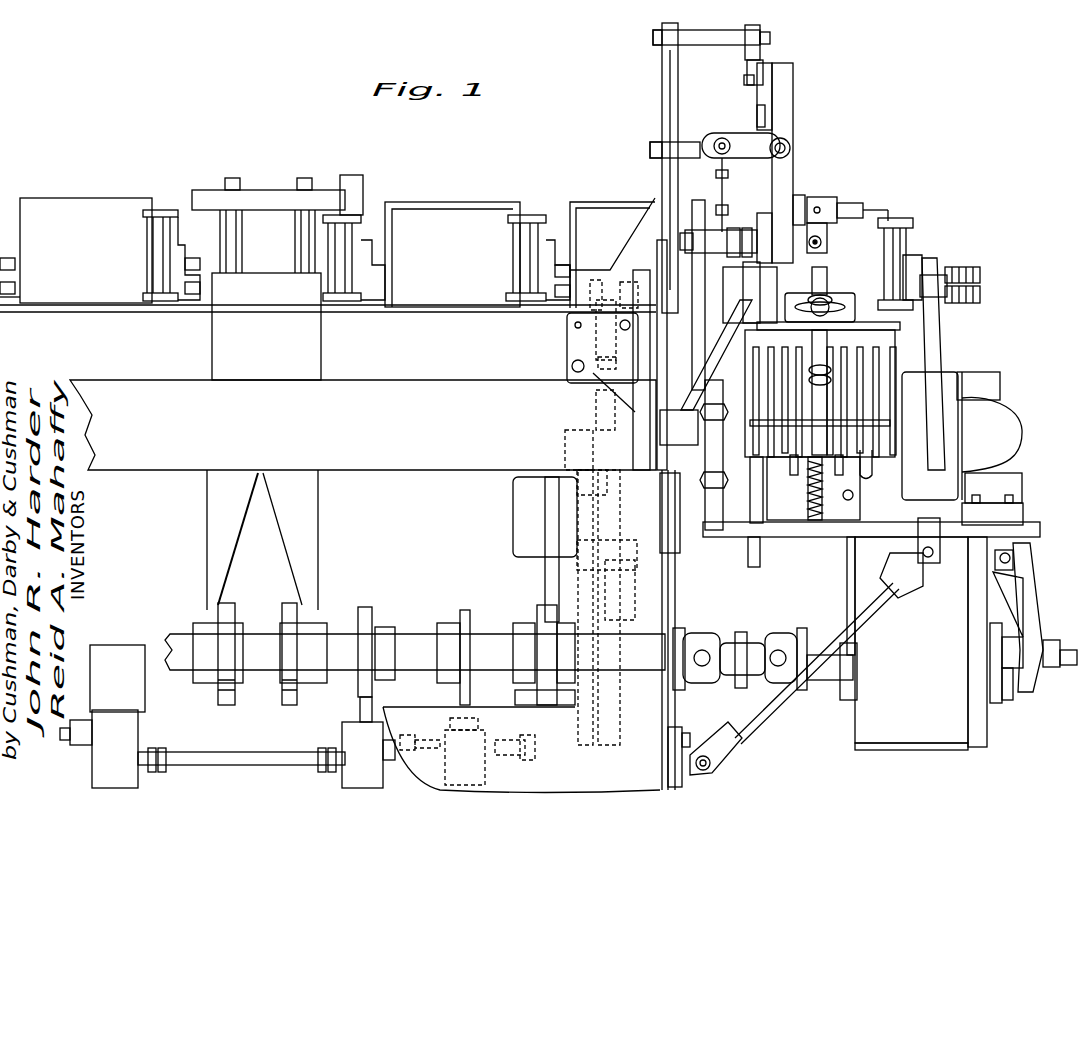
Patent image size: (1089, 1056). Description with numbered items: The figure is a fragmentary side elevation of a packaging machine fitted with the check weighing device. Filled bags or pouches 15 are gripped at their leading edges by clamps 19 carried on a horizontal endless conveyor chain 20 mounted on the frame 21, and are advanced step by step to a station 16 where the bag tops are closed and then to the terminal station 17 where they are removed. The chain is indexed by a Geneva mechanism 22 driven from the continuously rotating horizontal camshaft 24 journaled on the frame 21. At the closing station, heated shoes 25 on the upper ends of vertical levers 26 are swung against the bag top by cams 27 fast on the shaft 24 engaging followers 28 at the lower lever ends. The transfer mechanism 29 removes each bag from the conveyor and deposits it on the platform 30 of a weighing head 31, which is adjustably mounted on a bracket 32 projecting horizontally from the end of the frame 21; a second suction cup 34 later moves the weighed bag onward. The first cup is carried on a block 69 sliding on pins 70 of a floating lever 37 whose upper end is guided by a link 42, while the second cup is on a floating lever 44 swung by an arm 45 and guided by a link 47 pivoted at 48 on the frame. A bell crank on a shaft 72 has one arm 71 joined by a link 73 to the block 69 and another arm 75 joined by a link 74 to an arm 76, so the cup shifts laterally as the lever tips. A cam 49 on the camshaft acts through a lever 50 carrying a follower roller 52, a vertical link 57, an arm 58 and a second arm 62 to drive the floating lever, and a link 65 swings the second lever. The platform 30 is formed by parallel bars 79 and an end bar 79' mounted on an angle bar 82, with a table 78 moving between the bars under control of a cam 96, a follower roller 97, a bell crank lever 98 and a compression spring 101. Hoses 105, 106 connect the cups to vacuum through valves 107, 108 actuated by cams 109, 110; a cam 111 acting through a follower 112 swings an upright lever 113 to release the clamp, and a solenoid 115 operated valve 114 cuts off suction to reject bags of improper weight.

The bags or pouches 15 is at (114, 200).
The station 16 is at (275, 146).
The terminal station 17 is at (850, 147).
The clamps 19 is at (160, 213).
The conveyor chain 20 is at (980, 272).
The frame 21 is at (443, 376).
The Geneva mechanism 22 is at (940, 752).
The horizontal shaft 24 is at (178, 638).
The heated shoes 25 is at (263, 193).
The vertical levers 26 is at (243, 520).
The cams 27 is at (288, 618).
The followers 28 is at (232, 660).
The transfer mechanism 29 is at (844, 192).
The platform 30 is at (874, 469).
The weighing head 31 is at (1000, 416).
The bracket 32 is at (884, 534).
The suction cup 34 is at (825, 350).
The floating lever 37 is at (793, 112).
The link 42 is at (757, 112).
The floating lever 44 is at (770, 295).
The arm 45 is at (710, 358).
The link 47 is at (763, 57).
The pivot 48 is at (763, 40).
The cam 49 is at (588, 742).
The lever 50 is at (575, 498).
The follower roller 52 is at (610, 560).
The link 57 is at (603, 366).
The arm 58 is at (630, 306).
The second arm 62 is at (748, 228).
The link 65 is at (706, 438).
The block 69 is at (823, 196).
The pins 70 is at (852, 204).
The arm 71 is at (772, 174).
The shaft 72 is at (790, 140).
The link 73 is at (800, 195).
The link 74 is at (716, 182).
The arm 75 is at (722, 138).
The arm 76 is at (742, 214).
The member 78 is at (802, 455).
The bars 79 is at (838, 465).
The end bar 79' is at (841, 402).
The angle bar 82 is at (892, 434).
The cam 96 is at (620, 730).
The follower roller 97 is at (622, 600).
The bell crank lever 98 is at (600, 482).
The helical compression spring 101 is at (808, 502).
The flexible hose 105 is at (822, 242).
The flexible hose 106 is at (828, 274).
The valve 107 is at (486, 772).
The valve 108 is at (342, 735).
The cam 109 is at (465, 612).
The cam 110 is at (372, 612).
The cam 111 is at (1013, 714).
The follower 112 is at (1020, 642).
The upright lever 113 is at (937, 346).
The valve 114 is at (143, 734).
The solenoid 115 is at (148, 695).